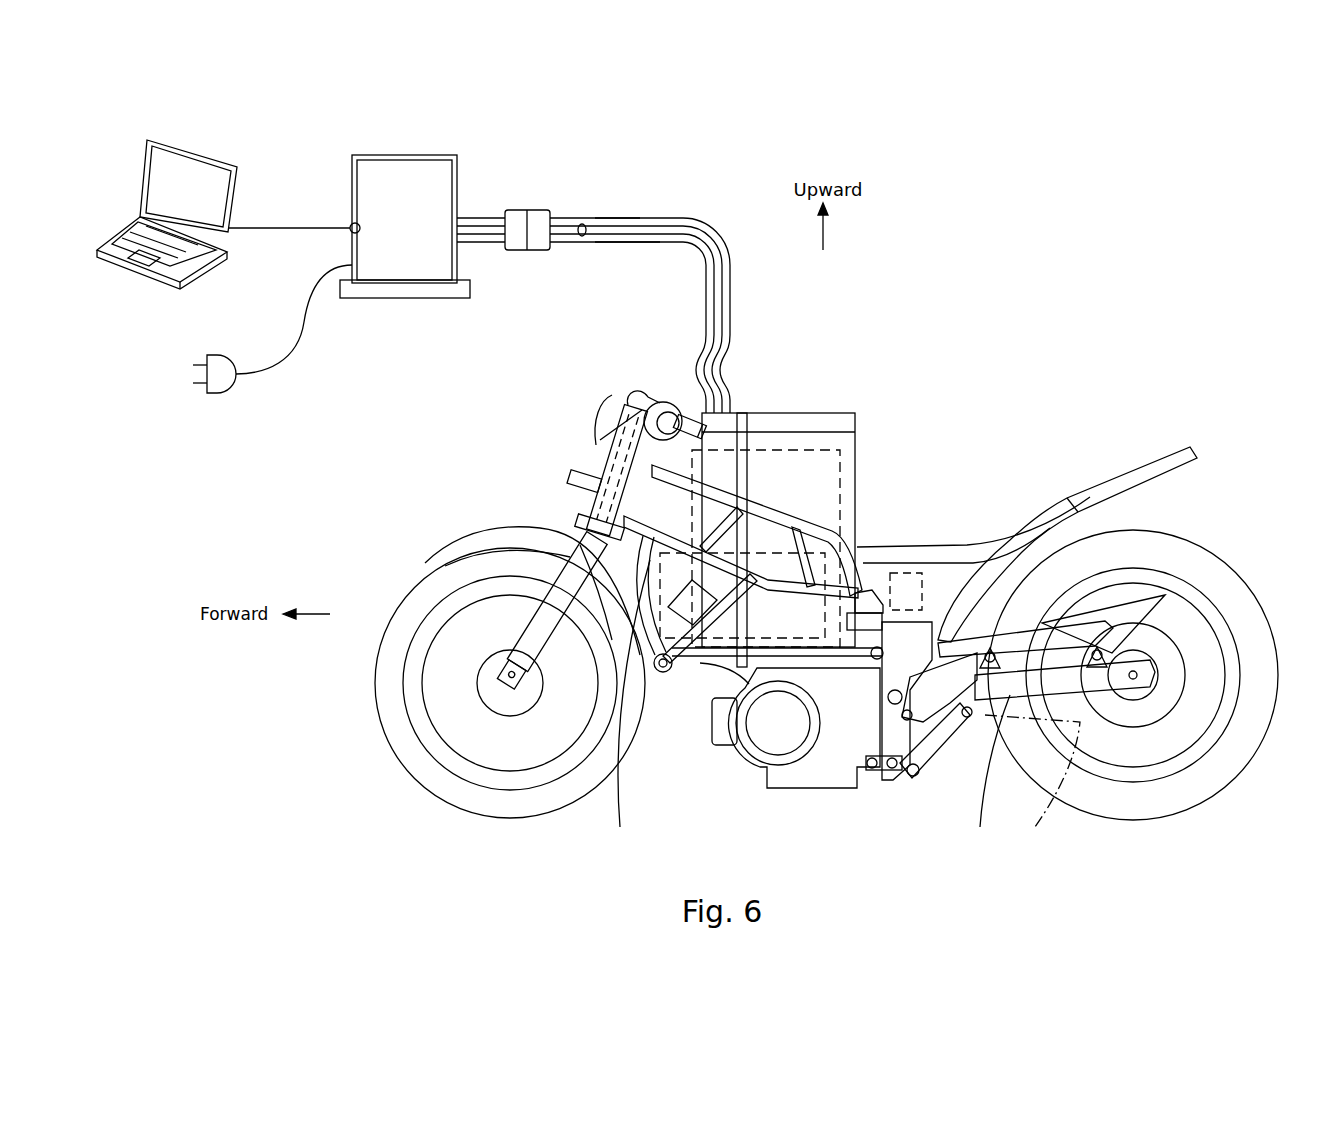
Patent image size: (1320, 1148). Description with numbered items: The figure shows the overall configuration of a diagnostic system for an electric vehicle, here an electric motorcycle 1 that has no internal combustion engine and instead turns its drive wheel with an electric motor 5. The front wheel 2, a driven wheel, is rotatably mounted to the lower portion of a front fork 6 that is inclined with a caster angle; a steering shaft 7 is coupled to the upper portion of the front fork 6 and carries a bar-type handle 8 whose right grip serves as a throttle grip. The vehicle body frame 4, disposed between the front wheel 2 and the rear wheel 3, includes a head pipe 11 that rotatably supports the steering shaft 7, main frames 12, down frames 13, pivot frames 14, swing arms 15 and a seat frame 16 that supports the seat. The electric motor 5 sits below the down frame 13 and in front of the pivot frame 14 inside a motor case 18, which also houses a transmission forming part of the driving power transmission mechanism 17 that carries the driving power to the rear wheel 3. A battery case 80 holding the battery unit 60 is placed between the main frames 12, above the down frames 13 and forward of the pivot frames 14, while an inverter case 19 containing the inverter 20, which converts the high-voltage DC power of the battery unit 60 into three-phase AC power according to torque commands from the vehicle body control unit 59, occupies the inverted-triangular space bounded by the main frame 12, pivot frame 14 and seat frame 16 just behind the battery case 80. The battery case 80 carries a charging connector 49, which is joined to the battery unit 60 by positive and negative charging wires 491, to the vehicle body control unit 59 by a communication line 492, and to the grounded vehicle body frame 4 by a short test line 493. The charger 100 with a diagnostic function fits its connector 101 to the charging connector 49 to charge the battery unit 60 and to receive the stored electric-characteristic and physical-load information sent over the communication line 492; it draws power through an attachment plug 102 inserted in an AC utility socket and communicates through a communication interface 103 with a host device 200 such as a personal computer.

The electric motorcycle 1 is at (1132, 350).
The front wheel 2 is at (436, 778).
The rear wheel 3 is at (1212, 778).
The vehicle body frame 4 is at (1133, 470).
The electric motor 5 is at (762, 740).
The front fork 6 is at (530, 540).
The steering shaft 7 is at (622, 438).
The bar-type handle 8 is at (689, 407).
The head pipe 11 is at (590, 440).
The main frames 12 is at (772, 440).
The down frames 13 is at (700, 670).
The pivot frames 14 is at (905, 730).
The swing arms 15 is at (1003, 700).
The seat frame 16 is at (1087, 495).
The driving power transmission mechanism 17 is at (1085, 720).
The motor case 18 is at (836, 748).
The inverter case 19 is at (1025, 520).
The inverter 20 is at (960, 565).
The charging connector 49 is at (540, 208).
The vehicle body control unit 59 is at (645, 605).
The battery unit 60 is at (820, 490).
The battery case 80 is at (856, 522).
The charger with a diagnostic function 100 is at (460, 166).
The connector 101 is at (519, 208).
The attachment plug 102 is at (222, 396).
The communication interface 103 is at (350, 227).
The host device 200 is at (243, 180).
The charging wires 491 is at (585, 223).
The communication line 492 is at (646, 243).
The short test line 493 is at (620, 218).